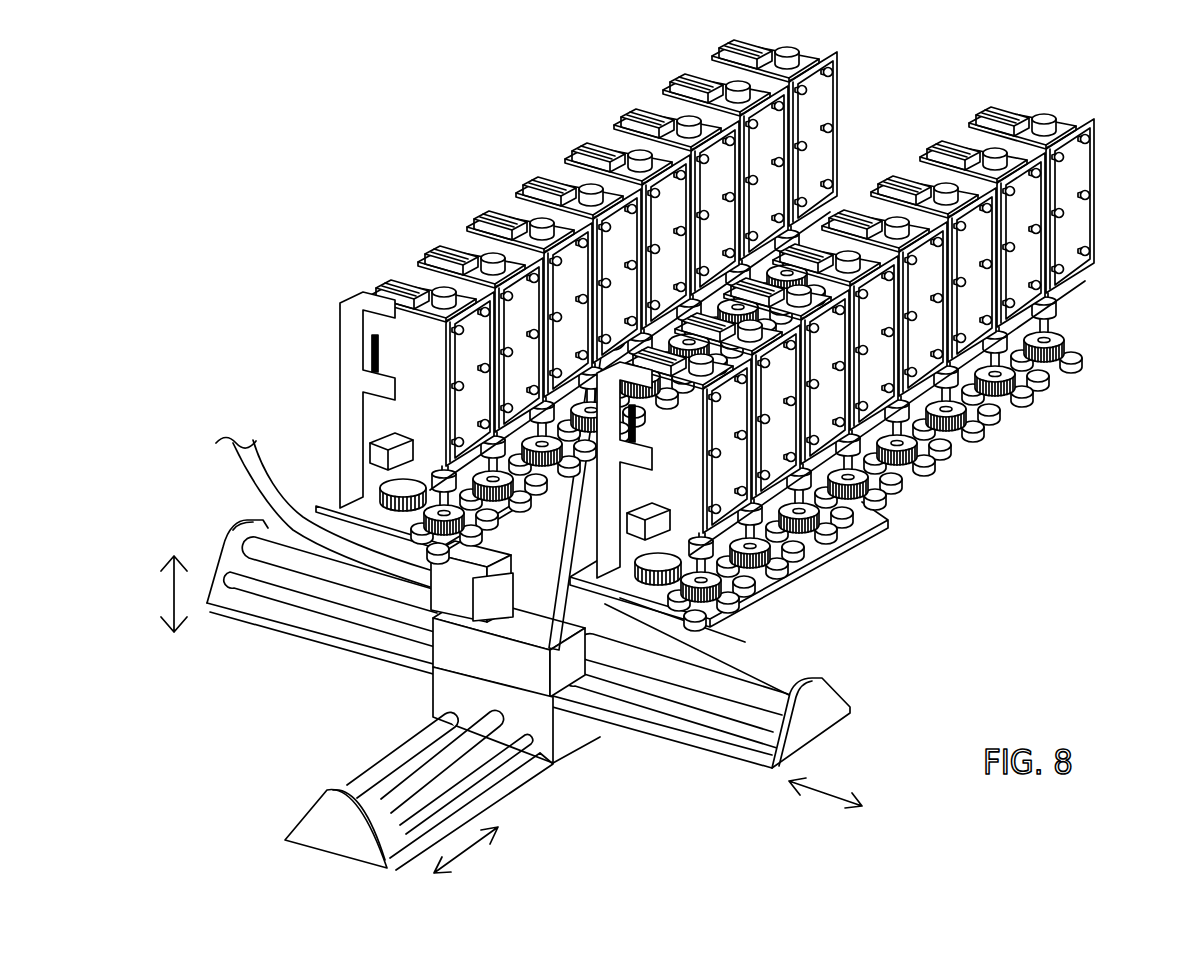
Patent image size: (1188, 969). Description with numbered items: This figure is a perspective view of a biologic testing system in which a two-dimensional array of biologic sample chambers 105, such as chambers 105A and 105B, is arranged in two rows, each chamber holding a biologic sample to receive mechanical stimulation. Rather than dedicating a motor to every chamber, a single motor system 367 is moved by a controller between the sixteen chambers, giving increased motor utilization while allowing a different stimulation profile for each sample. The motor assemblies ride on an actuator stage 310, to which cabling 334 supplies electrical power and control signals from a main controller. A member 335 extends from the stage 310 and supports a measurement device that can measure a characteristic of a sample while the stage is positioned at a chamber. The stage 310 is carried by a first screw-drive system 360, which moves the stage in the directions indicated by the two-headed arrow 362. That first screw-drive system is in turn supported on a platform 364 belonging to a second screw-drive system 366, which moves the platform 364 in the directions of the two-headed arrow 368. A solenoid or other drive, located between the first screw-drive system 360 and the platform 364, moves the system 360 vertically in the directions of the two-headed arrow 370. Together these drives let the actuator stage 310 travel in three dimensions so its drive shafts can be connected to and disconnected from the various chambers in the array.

The biologic sample chambers 105 is at (745, 335).
The biologic sample chamber 105A is at (1071, 249).
The biologic sample chamber 105B is at (1058, 288).
The actuator stage 310 is at (535, 640).
The cabling 334 is at (246, 463).
The member 335 is at (662, 640).
The first screw-drive system 360 is at (810, 713).
The two-headed arrow 362 is at (822, 793).
The platform 364 is at (440, 713).
The second screw-drive system 366 is at (328, 835).
The single motor system 367 is at (450, 585).
The two-headed arrow 368 is at (477, 850).
The two-headed arrow 370 is at (174, 592).